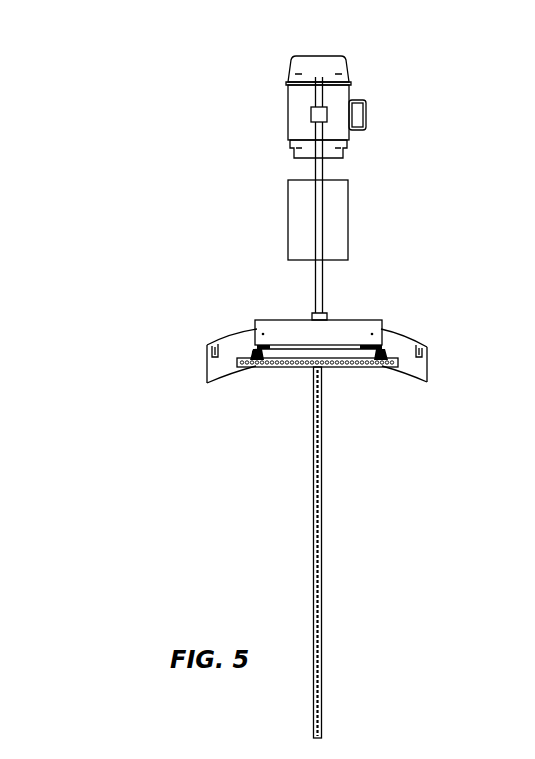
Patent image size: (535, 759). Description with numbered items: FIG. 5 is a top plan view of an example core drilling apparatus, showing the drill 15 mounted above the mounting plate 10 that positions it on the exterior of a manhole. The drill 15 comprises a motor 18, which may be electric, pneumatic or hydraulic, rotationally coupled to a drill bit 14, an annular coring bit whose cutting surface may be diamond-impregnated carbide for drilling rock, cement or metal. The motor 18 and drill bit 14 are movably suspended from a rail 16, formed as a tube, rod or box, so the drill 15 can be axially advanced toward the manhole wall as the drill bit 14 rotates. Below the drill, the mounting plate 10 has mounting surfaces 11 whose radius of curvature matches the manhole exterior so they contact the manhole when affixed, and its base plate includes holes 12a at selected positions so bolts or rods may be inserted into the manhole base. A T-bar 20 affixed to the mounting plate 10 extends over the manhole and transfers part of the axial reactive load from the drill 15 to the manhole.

The mounting plate 10 is at (90, 62).
The drill 15 is at (233, 105).
The motor 18 is at (348, 74).
The rail 16 is at (317, 172).
The drill bit 14 is at (348, 220).
The T-bar 20 is at (316, 297).
The mounting surfaces 11 is at (215, 380).
The holes 12a is at (207, 355).